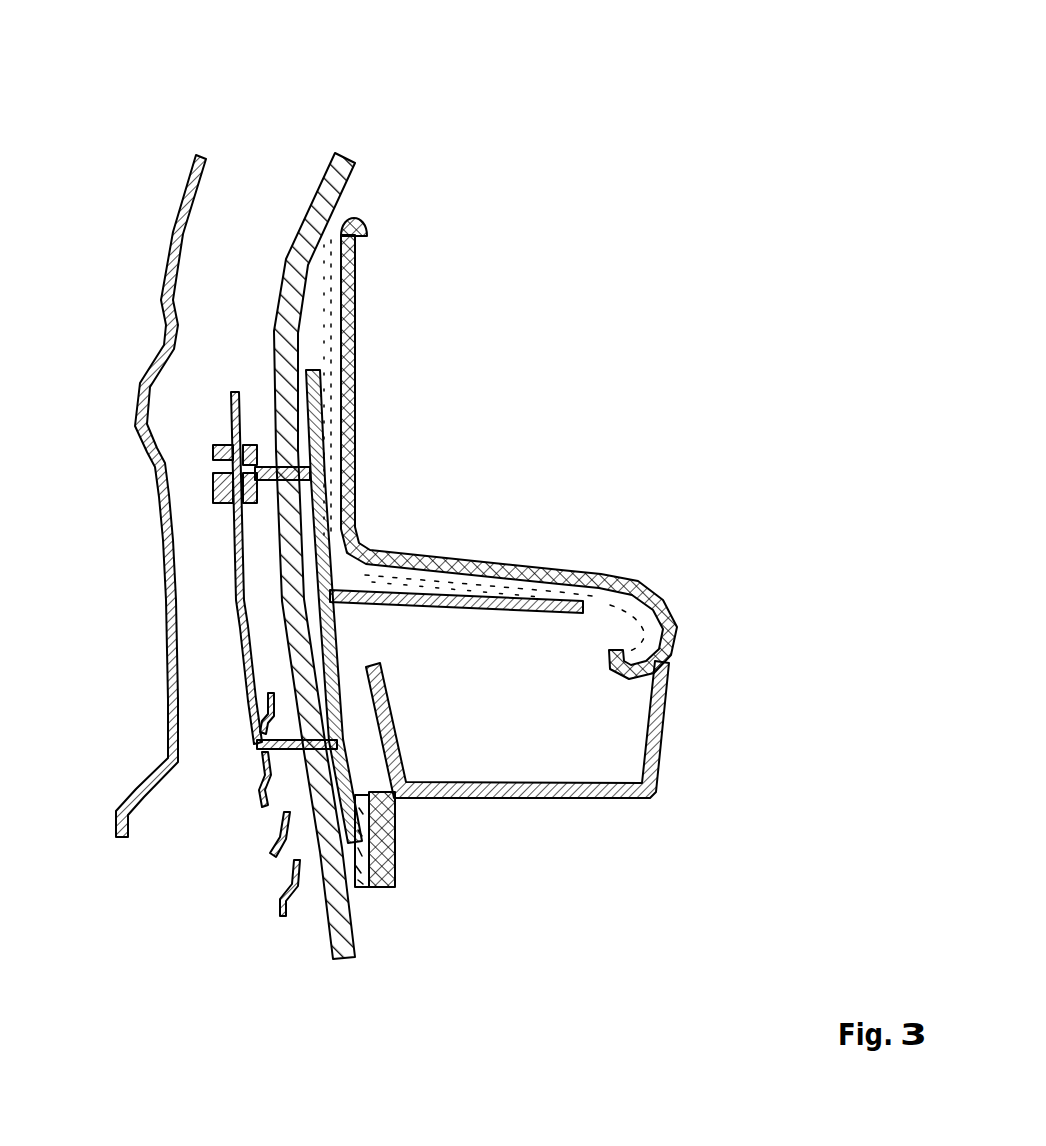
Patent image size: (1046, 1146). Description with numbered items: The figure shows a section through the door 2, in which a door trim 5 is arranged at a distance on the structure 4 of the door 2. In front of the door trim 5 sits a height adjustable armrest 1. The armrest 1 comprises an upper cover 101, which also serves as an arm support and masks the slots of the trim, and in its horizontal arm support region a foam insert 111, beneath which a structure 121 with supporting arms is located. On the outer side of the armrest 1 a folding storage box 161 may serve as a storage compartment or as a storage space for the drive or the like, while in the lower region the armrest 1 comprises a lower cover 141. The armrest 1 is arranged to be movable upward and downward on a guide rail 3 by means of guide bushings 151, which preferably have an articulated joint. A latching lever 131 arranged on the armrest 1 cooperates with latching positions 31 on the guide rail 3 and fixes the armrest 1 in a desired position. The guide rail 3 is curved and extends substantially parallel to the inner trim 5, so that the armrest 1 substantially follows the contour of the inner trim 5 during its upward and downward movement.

The height adjustable armrest 1 is at (536, 555).
The door 2 is at (417, 127).
The guide rail 3 is at (235, 395).
The structure 4 is at (165, 562).
The door trim 5 is at (340, 188).
The latching positions 31 is at (280, 873).
The upper cover 101 is at (353, 283).
The foam insert 111 is at (492, 563).
The structure with supporting arms 121 is at (332, 638).
The latching lever 131 is at (260, 767).
The lower cover 141 is at (387, 850).
The guide bushings 151 is at (217, 462).
The folding storage box 161 is at (667, 712).